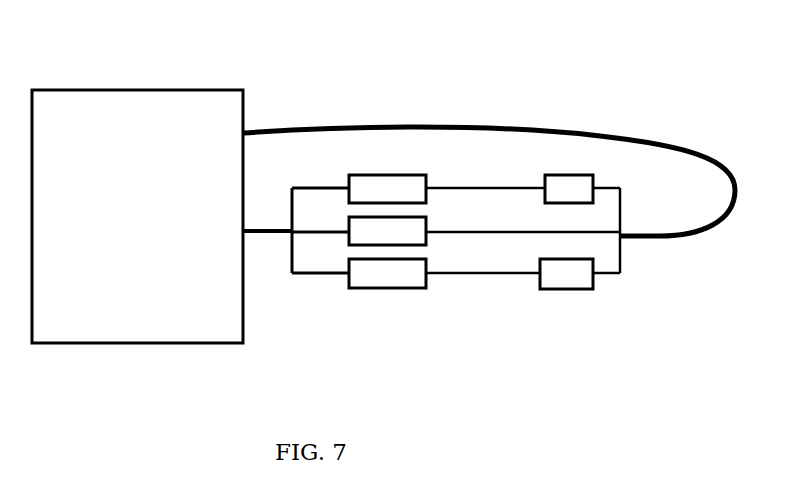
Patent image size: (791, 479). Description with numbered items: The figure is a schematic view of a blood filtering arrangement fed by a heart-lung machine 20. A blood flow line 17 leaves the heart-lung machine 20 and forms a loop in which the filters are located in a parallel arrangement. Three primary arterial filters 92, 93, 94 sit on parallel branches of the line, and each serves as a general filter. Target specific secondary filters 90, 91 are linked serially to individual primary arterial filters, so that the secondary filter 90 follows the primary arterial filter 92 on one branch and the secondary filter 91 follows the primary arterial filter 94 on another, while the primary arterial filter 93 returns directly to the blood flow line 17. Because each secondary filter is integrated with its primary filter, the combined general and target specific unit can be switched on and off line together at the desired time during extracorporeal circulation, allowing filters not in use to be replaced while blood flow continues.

The heart-lung machine 20 is at (155, 88).
The blood flow line 17 is at (435, 124).
The secondary filter 90 is at (577, 185).
The secondary filter 91 is at (575, 278).
The primary arterial filter 92 is at (403, 186).
The primary arterial filter 93 is at (415, 231).
The primary arterial filter 94 is at (420, 272).